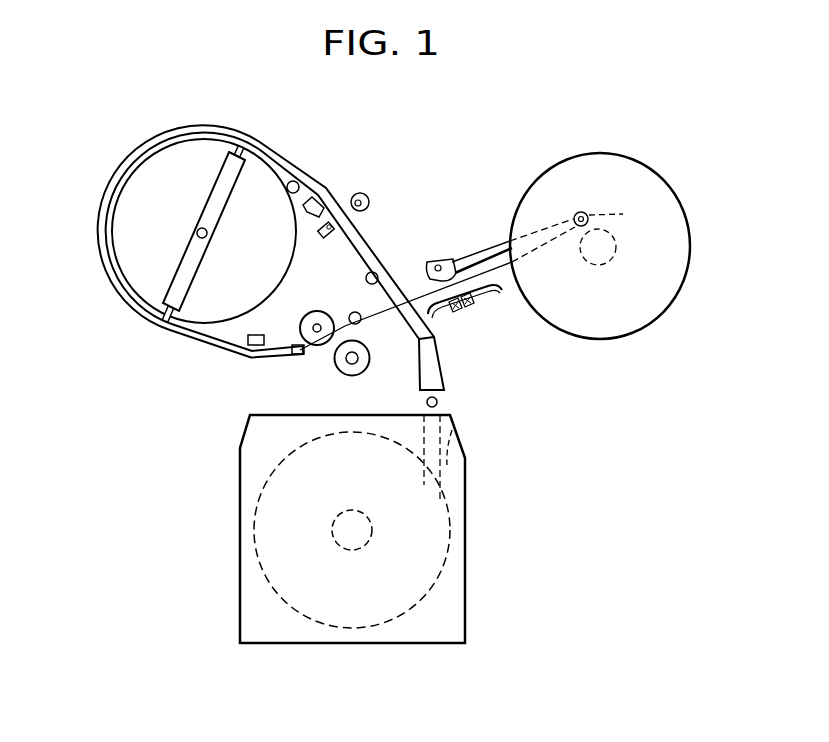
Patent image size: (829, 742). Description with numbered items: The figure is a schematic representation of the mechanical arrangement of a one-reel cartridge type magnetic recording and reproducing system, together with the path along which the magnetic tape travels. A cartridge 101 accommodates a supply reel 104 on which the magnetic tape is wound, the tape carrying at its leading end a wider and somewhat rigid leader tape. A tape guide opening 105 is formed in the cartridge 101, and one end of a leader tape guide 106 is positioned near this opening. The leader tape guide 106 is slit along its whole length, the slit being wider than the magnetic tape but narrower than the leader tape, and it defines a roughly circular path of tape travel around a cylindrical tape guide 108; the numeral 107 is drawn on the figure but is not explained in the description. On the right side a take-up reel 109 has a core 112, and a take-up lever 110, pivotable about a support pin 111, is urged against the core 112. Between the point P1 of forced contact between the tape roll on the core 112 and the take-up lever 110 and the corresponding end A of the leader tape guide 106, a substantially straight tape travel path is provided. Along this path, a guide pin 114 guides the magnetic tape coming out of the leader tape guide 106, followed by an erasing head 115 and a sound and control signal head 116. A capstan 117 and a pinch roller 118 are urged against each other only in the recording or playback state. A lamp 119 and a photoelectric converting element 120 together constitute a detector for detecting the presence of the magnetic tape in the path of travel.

The cartridge 101 is at (262, 641).
The supply reel 104 is at (357, 621).
The tape guide opening 105 is at (450, 443).
The leader tape guide 106 is at (296, 167).
The band tension rod 107 is at (238, 150).
The cylindrical tape guide 108 is at (200, 148).
The take-up reel 109 is at (626, 333).
The take-up lever 110 is at (489, 242).
The support pin 111 is at (429, 261).
The core 112 is at (593, 265).
The guide pin 114 is at (298, 183).
The erasing head 115 is at (303, 207).
The sound and control signal head 116 is at (253, 348).
The capstan 117 is at (359, 358).
The pinch roller 118 is at (304, 314).
The lamp 119 is at (370, 201).
The photoelectric converting element 120 is at (323, 234).
The end of the leader tape guide A is at (308, 354).
The point of forced contact P1 is at (592, 226).